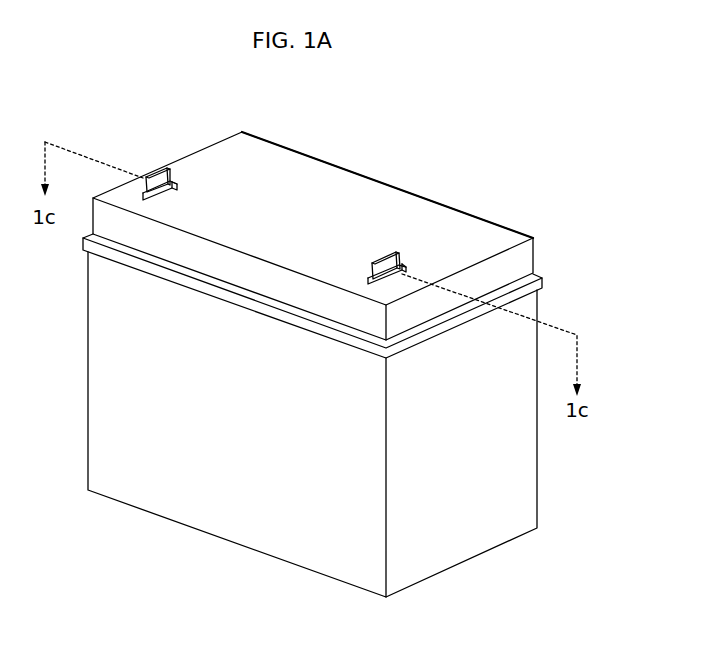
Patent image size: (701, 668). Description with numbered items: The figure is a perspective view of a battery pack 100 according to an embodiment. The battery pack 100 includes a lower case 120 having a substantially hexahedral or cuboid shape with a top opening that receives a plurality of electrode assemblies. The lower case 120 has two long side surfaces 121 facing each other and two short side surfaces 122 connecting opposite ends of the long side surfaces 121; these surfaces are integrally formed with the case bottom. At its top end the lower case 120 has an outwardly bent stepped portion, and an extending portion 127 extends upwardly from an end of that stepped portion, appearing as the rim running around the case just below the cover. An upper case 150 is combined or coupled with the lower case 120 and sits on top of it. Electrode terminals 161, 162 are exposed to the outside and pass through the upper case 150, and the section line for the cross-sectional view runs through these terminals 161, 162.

The battery pack 100 is at (521, 178).
The lower case 120 is at (534, 478).
The long side surfaces 121 is at (245, 527).
The short side surfaces 122 is at (443, 555).
The extending portion 127 is at (543, 280).
The upper case 150 is at (299, 176).
The electrode terminal 161 is at (162, 167).
The electrode terminal 162 is at (393, 250).